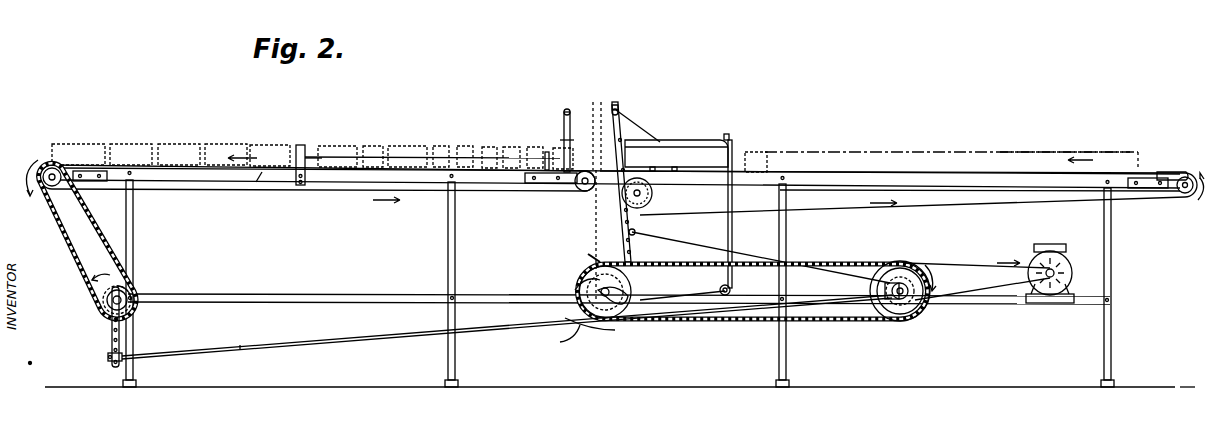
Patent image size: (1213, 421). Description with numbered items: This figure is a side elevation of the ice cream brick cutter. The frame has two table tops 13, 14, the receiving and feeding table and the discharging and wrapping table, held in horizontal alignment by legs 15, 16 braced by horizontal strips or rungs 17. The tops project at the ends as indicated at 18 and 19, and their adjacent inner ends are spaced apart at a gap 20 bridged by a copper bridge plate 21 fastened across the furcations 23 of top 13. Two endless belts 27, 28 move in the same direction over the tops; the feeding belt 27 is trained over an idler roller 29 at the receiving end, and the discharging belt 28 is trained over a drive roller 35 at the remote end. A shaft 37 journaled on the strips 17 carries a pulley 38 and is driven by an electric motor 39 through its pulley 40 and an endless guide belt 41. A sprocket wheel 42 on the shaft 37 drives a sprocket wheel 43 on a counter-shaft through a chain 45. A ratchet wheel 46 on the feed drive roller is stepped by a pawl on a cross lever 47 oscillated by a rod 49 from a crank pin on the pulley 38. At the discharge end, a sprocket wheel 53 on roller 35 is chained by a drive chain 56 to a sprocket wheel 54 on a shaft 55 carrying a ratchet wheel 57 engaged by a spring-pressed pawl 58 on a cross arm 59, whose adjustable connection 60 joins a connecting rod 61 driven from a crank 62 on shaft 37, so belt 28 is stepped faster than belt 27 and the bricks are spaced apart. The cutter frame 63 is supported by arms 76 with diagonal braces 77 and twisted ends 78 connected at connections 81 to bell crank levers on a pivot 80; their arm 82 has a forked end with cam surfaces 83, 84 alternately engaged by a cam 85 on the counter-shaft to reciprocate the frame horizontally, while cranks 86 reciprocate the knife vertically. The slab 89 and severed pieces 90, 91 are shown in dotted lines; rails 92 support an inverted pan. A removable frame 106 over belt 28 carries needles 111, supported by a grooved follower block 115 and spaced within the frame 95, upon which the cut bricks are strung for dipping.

The top or pressure board 13 is at (895, 178).
The top or pressure board 14 is at (212, 178).
The leg 15 is at (786, 238).
The leg 16 is at (133, 226).
The strip or rung 17 is at (320, 297).
The receiving end projection 18 is at (1168, 172).
The discharge end projection 19 is at (92, 165).
The gap 20 is at (590, 196).
The bridge plate 21 is at (604, 100).
The side extension or furcation 23 is at (612, 208).
The receiving and feeding belt 27 is at (755, 200).
The discharging and wrapping belt 28 is at (260, 182).
The idler roller 29 is at (1193, 200).
The drive roller 35 is at (44, 164).
The shaft 37 is at (900, 315).
The pulley 38 is at (915, 266).
The electric motor 39 is at (1034, 258).
The motor pulley 40 is at (1050, 280).
The endless guide belt 41 is at (986, 262).
The sprocket wheel 42 is at (883, 290).
The sprocket wheel 43 is at (640, 272).
The drive chain 45 is at (860, 264).
The ratchet wheel 46 is at (652, 180).
The cross lever or arm 47 is at (660, 210).
The rod 49 is at (764, 262).
The sprocket wheel 53 is at (20, 183).
The sprocket wheel 54 is at (126, 292).
The shaft 55 is at (130, 305).
The drive chain 56 is at (87, 241).
The ratchet wheel 57 is at (112, 302).
The spring-pressed pawl 58 is at (100, 300).
The cross arm 59 is at (110, 333).
The adjustable connection 60 is at (108, 358).
The connecting rod 61 is at (284, 346).
The crank 62 is at (894, 312).
The frame 63 is at (622, 105).
The arm 76 is at (664, 140).
The diagonal brace 77 is at (640, 130).
The twisted end 78 is at (724, 137).
The pivot 80 is at (731, 288).
The connection 81 is at (733, 150).
The horizontally extending arm 82 is at (684, 305).
The lower camming track 83 is at (586, 316).
The cam surface 84 is at (600, 262).
The cam or actuating arm 85 is at (622, 300).
The crank 86 is at (580, 290).
The slab or block 89 is at (980, 152).
The severed block or piece 90 is at (178, 142).
The severed block or piece 91 is at (455, 145).
The rail 92 is at (828, 160).
The frame 95 is at (576, 110).
The removable frame 106 is at (318, 142).
The needle or wire 111 is at (380, 150).
The grooved block 115 is at (547, 150).